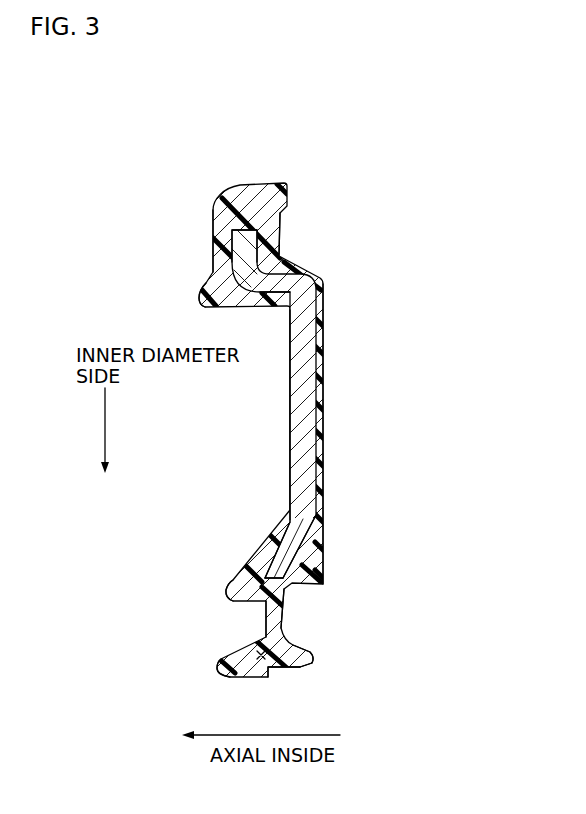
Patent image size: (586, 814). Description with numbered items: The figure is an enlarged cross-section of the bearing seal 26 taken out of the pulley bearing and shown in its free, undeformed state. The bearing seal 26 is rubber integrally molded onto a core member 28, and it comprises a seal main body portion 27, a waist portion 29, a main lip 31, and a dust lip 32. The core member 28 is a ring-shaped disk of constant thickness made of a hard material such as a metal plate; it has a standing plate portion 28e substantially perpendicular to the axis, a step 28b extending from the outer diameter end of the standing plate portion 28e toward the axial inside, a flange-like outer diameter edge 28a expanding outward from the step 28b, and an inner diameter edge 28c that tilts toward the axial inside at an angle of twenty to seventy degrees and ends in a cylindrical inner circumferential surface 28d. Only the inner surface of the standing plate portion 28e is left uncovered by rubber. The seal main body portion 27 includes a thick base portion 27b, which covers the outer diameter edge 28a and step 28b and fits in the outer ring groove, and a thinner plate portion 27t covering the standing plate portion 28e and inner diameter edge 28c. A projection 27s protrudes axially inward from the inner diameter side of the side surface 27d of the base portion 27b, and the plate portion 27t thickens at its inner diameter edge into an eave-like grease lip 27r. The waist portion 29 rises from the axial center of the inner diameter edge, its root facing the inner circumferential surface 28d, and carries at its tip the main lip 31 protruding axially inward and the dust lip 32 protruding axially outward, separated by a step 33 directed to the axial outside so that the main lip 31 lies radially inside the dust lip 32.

The bearing seal 26 is at (335, 146).
The seal main body portion 27 is at (376, 248).
The base portion 27b is at (273, 232).
The side surface 27d is at (213, 232).
The projection 27s is at (205, 305).
The plate portion 27t is at (325, 369).
The grease lip 27r is at (233, 586).
The core member 28 is at (297, 418).
The outer diameter edge 28a is at (237, 252).
The step 28b is at (268, 293).
The inner diameter edge 28c is at (266, 545).
The inner circumferential surface 28d is at (262, 583).
The standing plate portion 28e is at (296, 381).
The waist portion 29 is at (282, 616).
The main lip 31 is at (222, 677).
The dust lip 32 is at (306, 667).
The step 33 is at (270, 677).